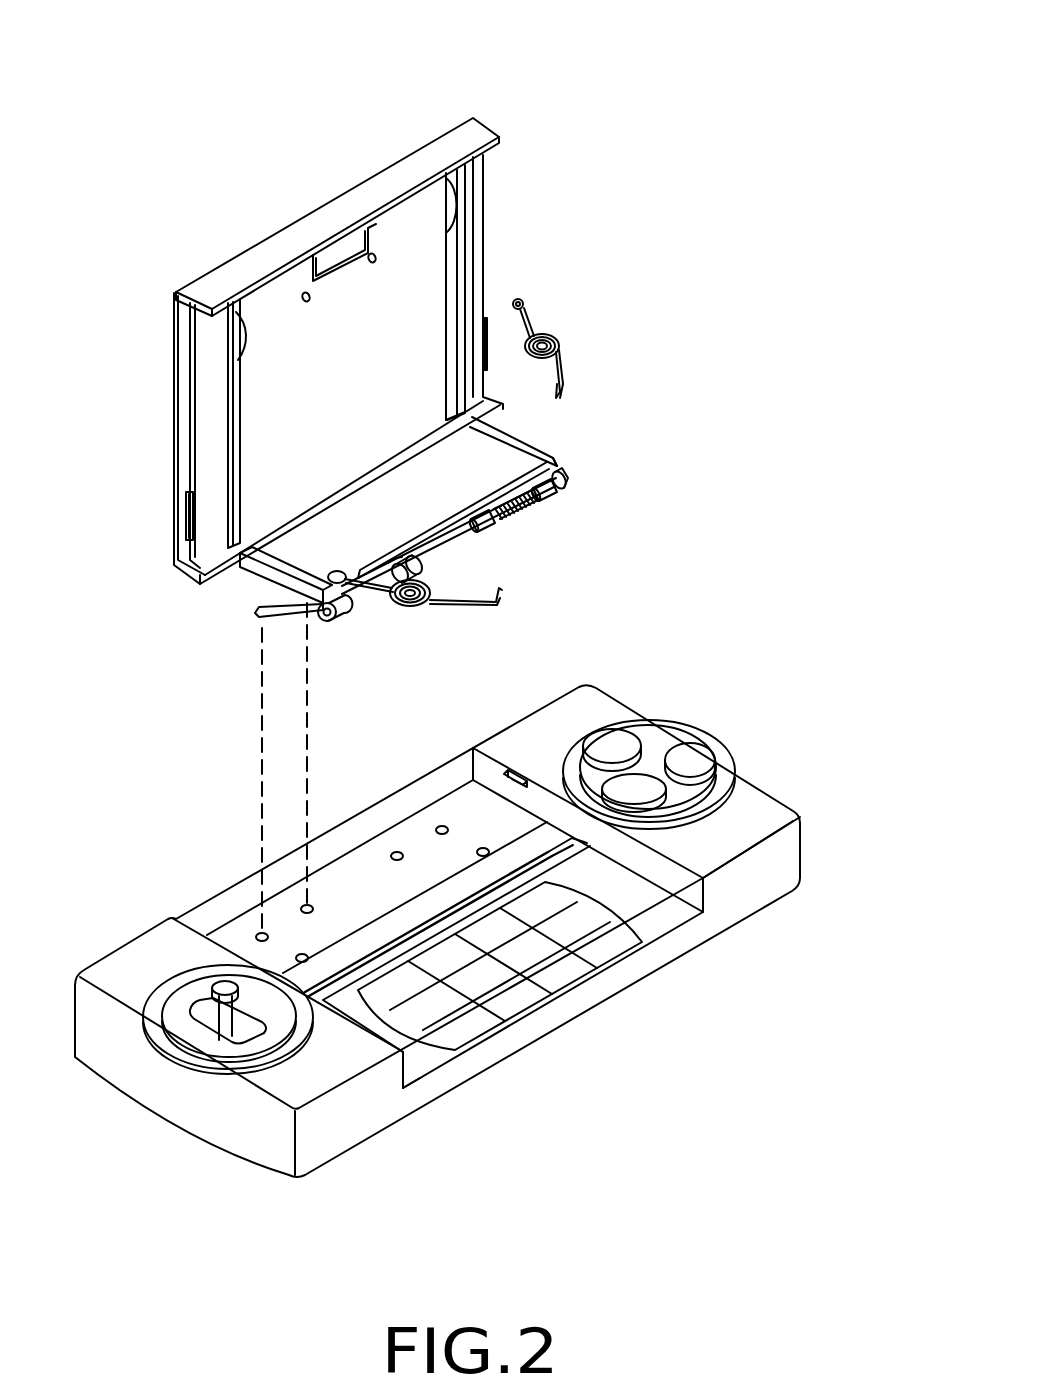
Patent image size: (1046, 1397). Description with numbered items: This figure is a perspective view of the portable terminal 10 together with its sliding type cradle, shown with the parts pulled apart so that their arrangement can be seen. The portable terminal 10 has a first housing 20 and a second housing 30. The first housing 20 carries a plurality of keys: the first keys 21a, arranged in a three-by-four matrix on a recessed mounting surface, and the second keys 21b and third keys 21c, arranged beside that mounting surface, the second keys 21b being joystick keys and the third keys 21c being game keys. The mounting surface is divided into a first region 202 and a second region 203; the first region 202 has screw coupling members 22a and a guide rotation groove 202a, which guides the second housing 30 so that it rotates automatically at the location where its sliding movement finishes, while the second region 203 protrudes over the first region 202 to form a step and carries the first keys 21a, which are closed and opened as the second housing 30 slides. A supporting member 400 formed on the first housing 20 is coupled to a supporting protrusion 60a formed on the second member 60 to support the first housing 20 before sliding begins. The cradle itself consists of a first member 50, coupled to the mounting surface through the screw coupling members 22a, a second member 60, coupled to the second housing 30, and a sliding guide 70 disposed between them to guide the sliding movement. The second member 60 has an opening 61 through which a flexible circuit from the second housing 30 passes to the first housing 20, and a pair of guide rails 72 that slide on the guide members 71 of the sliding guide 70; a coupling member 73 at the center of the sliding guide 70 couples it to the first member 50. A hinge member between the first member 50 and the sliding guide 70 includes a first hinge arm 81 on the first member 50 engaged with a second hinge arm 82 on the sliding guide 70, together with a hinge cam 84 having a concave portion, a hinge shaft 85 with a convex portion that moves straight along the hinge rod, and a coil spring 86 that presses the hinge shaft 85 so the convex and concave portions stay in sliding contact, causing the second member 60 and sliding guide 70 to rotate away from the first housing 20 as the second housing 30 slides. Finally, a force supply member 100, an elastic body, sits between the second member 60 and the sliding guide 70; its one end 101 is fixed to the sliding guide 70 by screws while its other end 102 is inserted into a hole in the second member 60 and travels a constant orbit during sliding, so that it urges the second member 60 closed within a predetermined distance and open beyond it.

The portable terminal 10 is at (537, 77).
The first housing 20 is at (151, 1124).
The first keys 21a is at (513, 995).
The second keys 21b is at (227, 1027).
The third keys 21c is at (698, 760).
The screw coupling members 22a is at (397, 853).
The second housing 30 is at (174, 357).
The first member 50 is at (257, 614).
The second member 60 is at (215, 407).
The supporting protrusion 60a is at (186, 515).
The opening for a flexible circuit 61 is at (345, 248).
The sliding guide 70 is at (96, 618).
The guide members 71 is at (263, 582).
The guide rails 72 is at (460, 255).
The coupling member 73 is at (420, 548).
The first hinge arm 81 is at (493, 532).
The second hinge arm 82 is at (563, 477).
The hinge cam 84 is at (558, 496).
The hinge shaft 85 is at (536, 500).
The coil spring 86 is at (518, 512).
The force supply member 100 is at (663, 295).
The one end of the force supply member 101 is at (562, 383).
The other end of the force supply member 102 is at (524, 304).
The first region 202 is at (455, 808).
The guide rotation groove 202a is at (557, 857).
The second region 203 is at (417, 1058).
The supporting member 400 is at (515, 770).